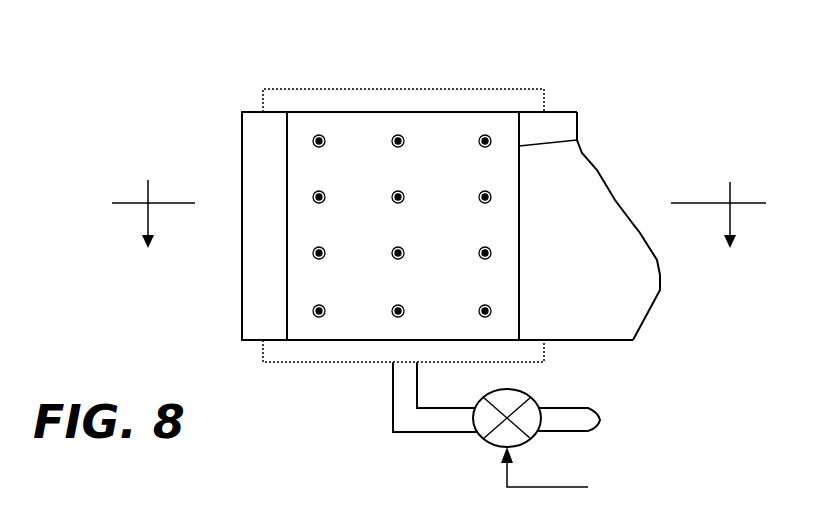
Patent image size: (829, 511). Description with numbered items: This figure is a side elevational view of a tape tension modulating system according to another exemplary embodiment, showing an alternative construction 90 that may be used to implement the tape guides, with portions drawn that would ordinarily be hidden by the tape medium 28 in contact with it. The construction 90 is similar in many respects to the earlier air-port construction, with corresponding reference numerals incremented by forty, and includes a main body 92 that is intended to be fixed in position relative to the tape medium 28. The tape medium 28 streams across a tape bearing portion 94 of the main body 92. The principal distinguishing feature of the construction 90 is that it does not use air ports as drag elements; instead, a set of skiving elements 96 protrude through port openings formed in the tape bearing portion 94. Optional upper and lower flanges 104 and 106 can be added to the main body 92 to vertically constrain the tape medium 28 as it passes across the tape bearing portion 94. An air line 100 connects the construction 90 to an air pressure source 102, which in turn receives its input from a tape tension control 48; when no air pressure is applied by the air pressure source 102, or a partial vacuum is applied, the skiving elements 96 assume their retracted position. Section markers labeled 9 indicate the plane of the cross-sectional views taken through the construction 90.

The alternative construction 90 is at (162, 108).
The tape bearing portion 94 is at (438, 122).
The skiving elements 96 is at (322, 134).
The main body 92 is at (577, 140).
The tape medium 28 is at (602, 342).
The upper flange 104 is at (288, 89).
The lower flange 106 is at (288, 362).
The air line 100 is at (393, 385).
The air pressure source 102 is at (480, 437).
The tape tension control 48 is at (620, 477).
The section line 9- 9 is at (438, 205).